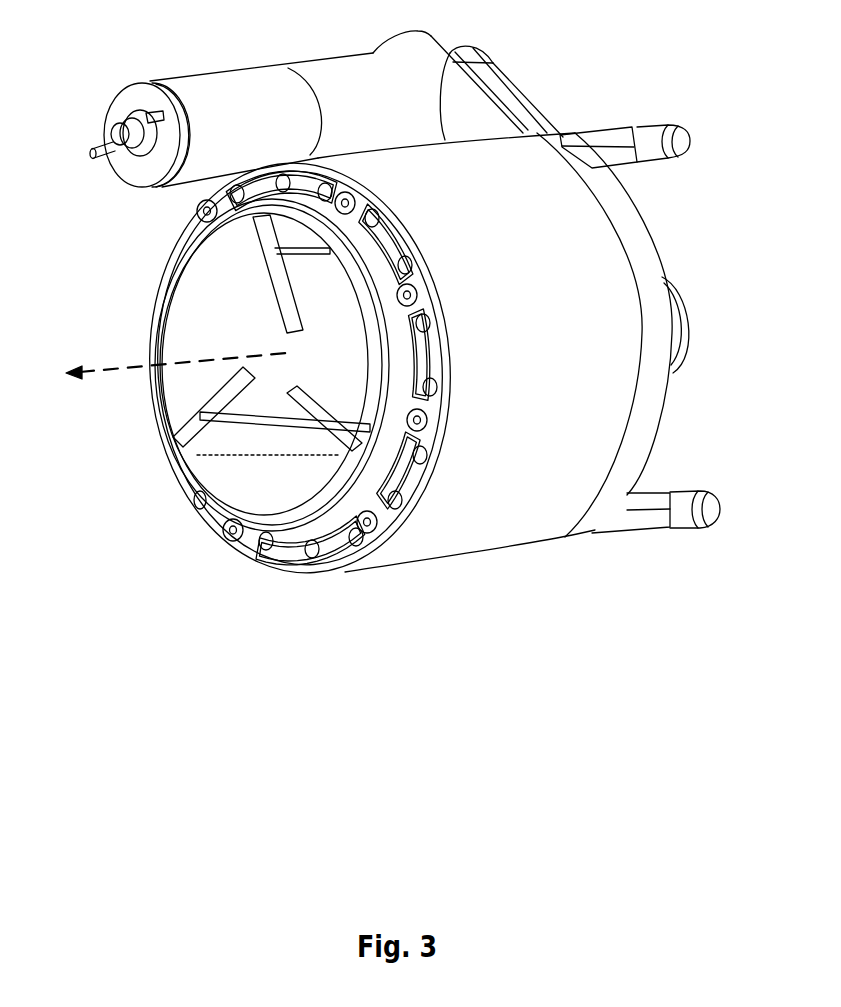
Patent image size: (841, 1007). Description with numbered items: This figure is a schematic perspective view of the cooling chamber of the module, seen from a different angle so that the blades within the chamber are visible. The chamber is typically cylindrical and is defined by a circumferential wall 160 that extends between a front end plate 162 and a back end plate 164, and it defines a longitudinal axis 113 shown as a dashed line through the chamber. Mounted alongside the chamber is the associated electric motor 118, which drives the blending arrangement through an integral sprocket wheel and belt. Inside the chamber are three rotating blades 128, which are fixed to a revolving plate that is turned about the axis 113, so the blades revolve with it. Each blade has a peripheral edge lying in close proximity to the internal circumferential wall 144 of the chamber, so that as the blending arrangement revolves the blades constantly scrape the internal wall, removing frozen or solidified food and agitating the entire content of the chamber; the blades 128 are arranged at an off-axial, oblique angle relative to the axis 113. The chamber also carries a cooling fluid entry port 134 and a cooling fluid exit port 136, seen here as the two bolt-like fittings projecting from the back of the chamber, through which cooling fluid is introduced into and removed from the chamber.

The longitudinal axis 113 is at (154, 372).
The electric motor 118 is at (245, 100).
The rotating blades 128 is at (222, 442).
The cooling fluid entry port 134 is at (633, 523).
The cooling fluid exit port 136 is at (593, 147).
The internal circumferential wall 144 is at (157, 306).
The circumferential wall 160 is at (437, 545).
The front end plate 162 is at (248, 547).
The back end plate 164 is at (577, 533).